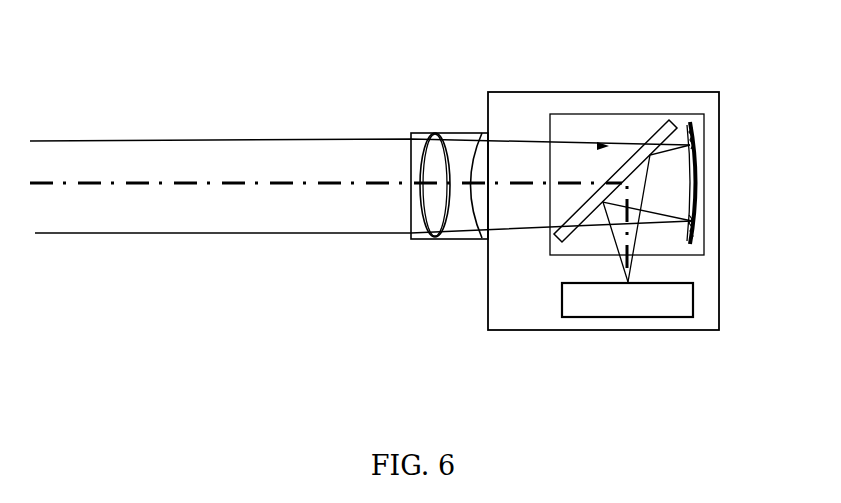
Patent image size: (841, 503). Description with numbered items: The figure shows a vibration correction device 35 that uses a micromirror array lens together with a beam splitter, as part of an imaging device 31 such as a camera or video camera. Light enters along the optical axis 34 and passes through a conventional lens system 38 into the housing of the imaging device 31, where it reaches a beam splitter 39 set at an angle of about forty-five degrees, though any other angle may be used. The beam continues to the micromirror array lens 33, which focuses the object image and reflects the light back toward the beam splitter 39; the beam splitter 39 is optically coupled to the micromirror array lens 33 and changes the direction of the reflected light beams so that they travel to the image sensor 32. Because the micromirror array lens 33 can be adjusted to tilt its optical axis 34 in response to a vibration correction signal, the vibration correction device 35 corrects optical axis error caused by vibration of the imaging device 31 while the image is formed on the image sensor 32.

The imaging device 31 is at (515, 113).
The image sensor 32 is at (677, 295).
The micromirror array lens 33 is at (695, 198).
The optical axis 34 is at (233, 183).
The vibration correction device 35 is at (692, 124).
The conventional lens system 38 is at (435, 239).
The beam splitter 39 is at (635, 153).